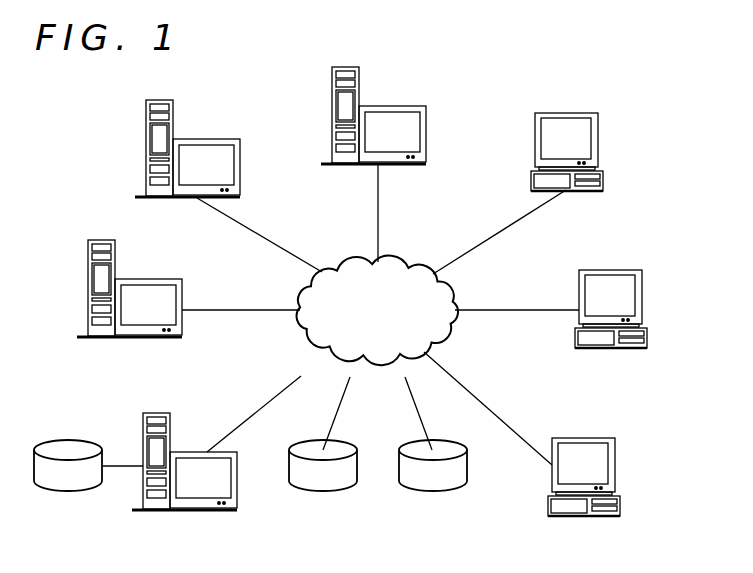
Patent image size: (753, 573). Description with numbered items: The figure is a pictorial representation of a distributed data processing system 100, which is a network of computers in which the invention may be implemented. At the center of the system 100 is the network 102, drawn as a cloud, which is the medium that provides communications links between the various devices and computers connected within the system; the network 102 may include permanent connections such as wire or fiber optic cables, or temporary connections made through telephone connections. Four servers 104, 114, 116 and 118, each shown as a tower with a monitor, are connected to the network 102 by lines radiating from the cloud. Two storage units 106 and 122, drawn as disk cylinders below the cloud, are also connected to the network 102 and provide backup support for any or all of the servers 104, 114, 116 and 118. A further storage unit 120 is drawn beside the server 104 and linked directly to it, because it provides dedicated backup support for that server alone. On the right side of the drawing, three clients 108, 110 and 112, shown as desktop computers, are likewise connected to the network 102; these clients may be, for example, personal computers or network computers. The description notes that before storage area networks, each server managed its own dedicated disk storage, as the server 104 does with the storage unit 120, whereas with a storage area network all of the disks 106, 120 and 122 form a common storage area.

The distributed data processing system 100 is at (531, 91).
The network 102 is at (410, 263).
The server 104 is at (197, 513).
The storage unit 106 is at (433, 495).
The client 108 is at (598, 140).
The client 110 is at (641, 297).
The client 112 is at (615, 464).
The server 114 is at (88, 290).
The server 116 is at (146, 148).
The server 118 is at (332, 117).
The storage unit 120 is at (67, 495).
The storage unit 122 is at (321, 495).